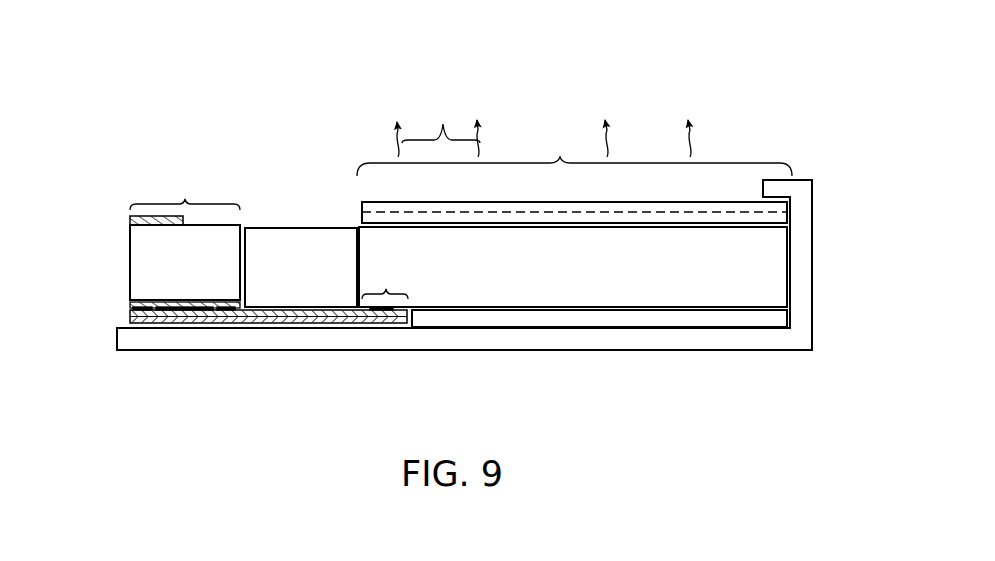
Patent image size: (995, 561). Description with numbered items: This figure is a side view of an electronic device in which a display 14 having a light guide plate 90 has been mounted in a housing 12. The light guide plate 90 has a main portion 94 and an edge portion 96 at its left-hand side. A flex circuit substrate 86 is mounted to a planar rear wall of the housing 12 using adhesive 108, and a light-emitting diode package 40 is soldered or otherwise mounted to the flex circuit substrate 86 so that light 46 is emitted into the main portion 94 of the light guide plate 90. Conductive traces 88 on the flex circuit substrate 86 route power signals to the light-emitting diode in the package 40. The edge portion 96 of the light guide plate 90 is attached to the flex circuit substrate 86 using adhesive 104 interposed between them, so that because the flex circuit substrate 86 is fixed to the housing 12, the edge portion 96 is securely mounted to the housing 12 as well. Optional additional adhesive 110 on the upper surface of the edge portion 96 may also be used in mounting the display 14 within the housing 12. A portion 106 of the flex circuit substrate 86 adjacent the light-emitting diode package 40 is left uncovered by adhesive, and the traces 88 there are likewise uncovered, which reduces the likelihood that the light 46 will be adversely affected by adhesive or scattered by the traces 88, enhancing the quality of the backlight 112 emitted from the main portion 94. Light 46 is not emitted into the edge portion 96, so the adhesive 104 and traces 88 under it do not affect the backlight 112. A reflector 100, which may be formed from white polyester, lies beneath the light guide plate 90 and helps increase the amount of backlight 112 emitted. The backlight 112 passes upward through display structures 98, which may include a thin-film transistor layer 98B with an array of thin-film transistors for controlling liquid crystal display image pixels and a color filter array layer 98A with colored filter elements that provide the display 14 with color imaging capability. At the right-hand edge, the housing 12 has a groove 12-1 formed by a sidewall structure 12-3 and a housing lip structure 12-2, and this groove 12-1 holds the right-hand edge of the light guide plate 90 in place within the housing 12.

The display 14 is at (601, 60).
The housing 12 is at (458, 352).
The groove 12-1 is at (792, 358).
The housing lip structure 12-2 is at (785, 196).
The sidewall structure 12-3 is at (814, 232).
The light-emitting diode package 40 is at (287, 230).
The light 46 is at (393, 254).
The flex circuit substrate 86 is at (222, 325).
The conductive traces 88 is at (228, 307).
The light guide plate 90 is at (130, 262).
The main portion 94 is at (574, 156).
The edge portion 96 is at (185, 191).
The display structures 98 is at (678, 205).
The color filter array layer 98A is at (588, 212).
The thin-film transistor layer 98B is at (513, 220).
The reflector 100 is at (583, 320).
The adhesive 104 is at (130, 304).
The portion of flex circuit substrate 106 is at (385, 283).
The adhesive 108 is at (133, 324).
The adhesive 110 is at (130, 218).
The backlight 112 is at (710, 123).